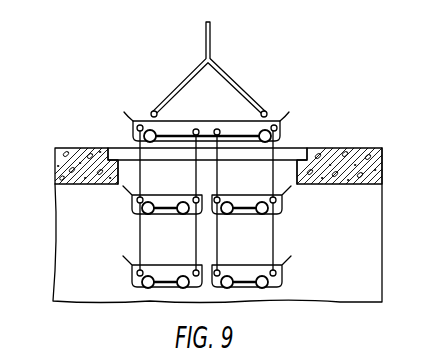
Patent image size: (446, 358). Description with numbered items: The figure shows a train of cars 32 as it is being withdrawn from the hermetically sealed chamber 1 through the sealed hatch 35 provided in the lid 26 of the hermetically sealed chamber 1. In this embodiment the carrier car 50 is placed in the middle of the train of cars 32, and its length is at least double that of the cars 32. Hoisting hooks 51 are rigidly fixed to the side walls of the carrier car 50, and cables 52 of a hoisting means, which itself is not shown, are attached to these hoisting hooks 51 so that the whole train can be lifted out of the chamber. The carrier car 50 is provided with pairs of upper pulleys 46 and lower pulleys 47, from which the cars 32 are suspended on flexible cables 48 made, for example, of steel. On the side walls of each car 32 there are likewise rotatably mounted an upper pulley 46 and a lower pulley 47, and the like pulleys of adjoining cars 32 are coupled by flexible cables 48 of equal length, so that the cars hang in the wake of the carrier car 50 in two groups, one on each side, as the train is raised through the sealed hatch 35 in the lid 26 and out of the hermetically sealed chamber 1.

The hermetically sealed chamber 1 is at (348, 277).
The lid 26 is at (357, 149).
The cars 32 is at (168, 214).
The sealed hatch 35 is at (291, 150).
The upper pulley 46 is at (254, 120).
The lower pulley 47 is at (217, 129).
The flexible cables 48 is at (139, 147).
The carrier car 50 is at (163, 128).
The hoisting hooks 51 is at (267, 111).
The cables 52 is at (227, 73).